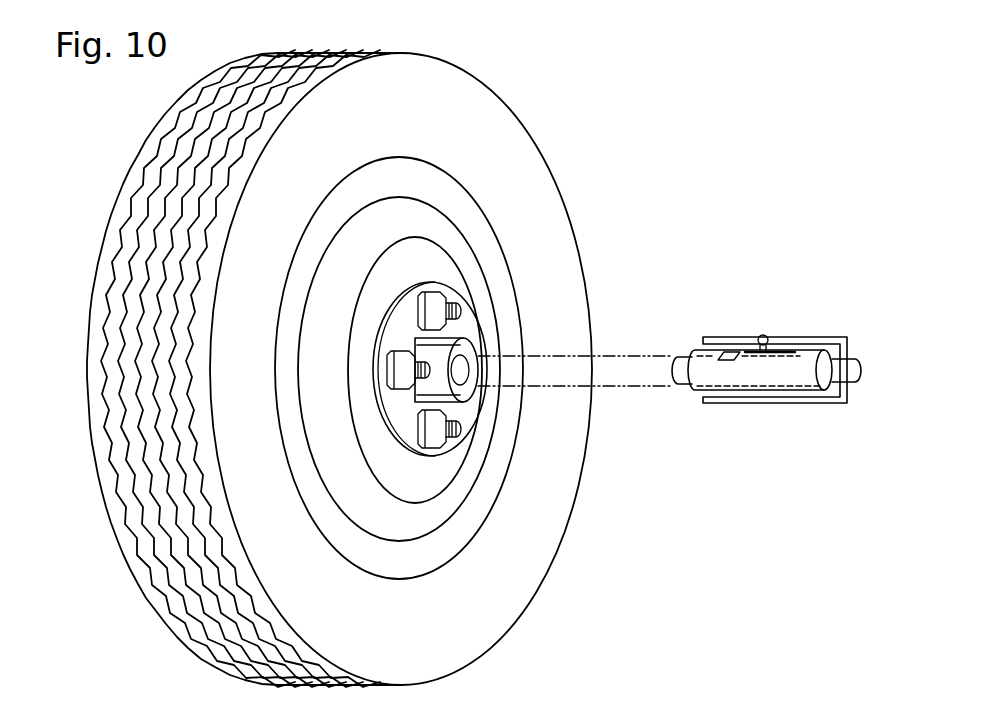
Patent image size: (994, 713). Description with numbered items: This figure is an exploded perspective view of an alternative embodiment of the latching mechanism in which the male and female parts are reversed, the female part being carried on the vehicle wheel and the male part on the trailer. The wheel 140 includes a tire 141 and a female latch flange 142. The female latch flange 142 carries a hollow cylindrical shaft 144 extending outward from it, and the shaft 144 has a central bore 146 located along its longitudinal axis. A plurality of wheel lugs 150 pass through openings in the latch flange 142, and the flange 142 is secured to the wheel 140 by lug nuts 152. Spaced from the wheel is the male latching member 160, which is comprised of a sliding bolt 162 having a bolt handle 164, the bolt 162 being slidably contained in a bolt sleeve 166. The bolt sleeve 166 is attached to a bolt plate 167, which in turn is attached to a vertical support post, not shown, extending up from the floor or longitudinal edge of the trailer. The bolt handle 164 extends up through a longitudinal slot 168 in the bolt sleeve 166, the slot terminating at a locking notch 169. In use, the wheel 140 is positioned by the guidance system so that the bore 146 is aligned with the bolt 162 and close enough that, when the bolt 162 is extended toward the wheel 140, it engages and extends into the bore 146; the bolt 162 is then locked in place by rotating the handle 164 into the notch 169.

The wheel 140 is at (113, 193).
The tire 141 is at (512, 108).
The female latch flange 142 is at (540, 333).
The hollow cylindrical shaft 144 is at (430, 384).
The central bore 146 is at (468, 374).
The wheel lugs 150 is at (447, 345).
The lug nuts 152 is at (388, 368).
The male latching member 160 is at (745, 292).
The sliding bolt 162 is at (683, 390).
The bolt handle 164 is at (763, 335).
The bolt sleeve 166 is at (795, 397).
The bolt plate 167 is at (842, 350).
The longitudinal slot 168 is at (792, 350).
The locking notch 169 is at (727, 352).